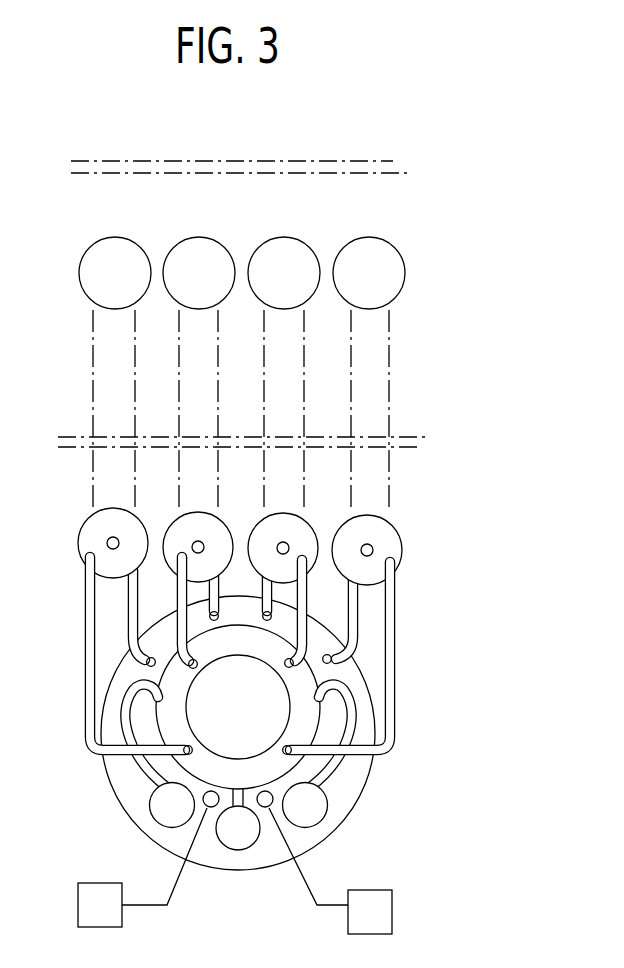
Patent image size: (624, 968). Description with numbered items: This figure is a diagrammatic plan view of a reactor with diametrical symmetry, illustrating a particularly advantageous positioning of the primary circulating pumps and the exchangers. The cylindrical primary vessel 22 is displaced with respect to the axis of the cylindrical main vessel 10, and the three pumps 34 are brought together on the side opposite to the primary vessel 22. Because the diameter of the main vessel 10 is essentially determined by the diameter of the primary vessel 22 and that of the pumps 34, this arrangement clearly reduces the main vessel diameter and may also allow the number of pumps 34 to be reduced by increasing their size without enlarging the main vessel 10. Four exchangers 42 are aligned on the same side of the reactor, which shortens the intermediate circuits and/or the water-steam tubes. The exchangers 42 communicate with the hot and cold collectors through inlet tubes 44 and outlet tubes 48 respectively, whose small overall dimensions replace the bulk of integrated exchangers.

The main vessel 10 is at (109, 782).
The primary vessel 22 is at (160, 712).
The pumps 34 is at (228, 841).
The exchangers 42 is at (80, 532).
The inlet tubes 44 is at (84, 648).
The outlet tubes 48 is at (128, 597).